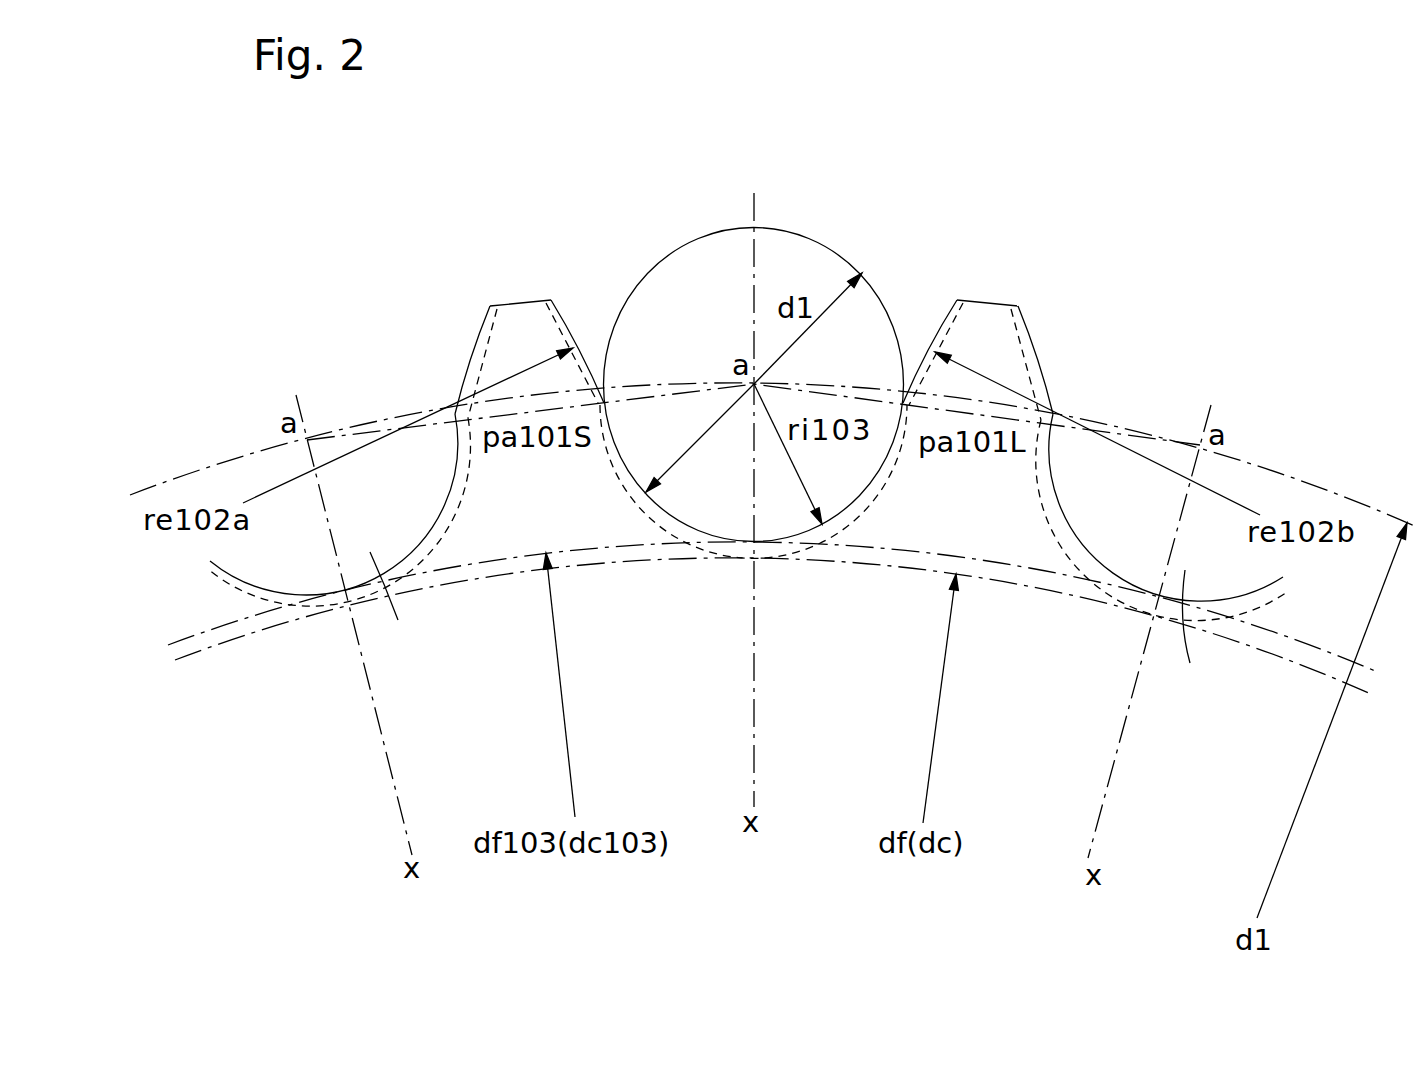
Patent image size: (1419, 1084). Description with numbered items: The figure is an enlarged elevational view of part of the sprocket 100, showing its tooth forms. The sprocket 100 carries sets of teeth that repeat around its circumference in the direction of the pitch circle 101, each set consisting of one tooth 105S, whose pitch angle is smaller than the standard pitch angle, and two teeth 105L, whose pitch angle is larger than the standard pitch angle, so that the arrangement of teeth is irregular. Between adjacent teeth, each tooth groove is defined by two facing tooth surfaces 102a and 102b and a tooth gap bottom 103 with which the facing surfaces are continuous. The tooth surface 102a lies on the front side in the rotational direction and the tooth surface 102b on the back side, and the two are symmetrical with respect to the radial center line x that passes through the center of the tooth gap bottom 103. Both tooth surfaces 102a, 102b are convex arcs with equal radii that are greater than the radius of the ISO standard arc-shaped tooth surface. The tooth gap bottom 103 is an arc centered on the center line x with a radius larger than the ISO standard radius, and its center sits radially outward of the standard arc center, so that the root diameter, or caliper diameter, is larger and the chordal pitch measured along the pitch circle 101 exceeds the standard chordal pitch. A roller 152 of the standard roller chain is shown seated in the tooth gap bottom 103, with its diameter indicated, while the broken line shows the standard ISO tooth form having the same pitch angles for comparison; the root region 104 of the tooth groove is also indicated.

The sprocket 100 is at (747, 452).
The pitch circle 101 is at (1272, 470).
The tooth surface 102a is at (482, 330).
The tooth surface 102b is at (562, 317).
The tooth gap bottom 103 is at (270, 585).
The tooth root portion 104 is at (797, 626).
The tooth 105S is at (520, 300).
The tooth 105L is at (990, 307).
The roller 152 is at (712, 230).